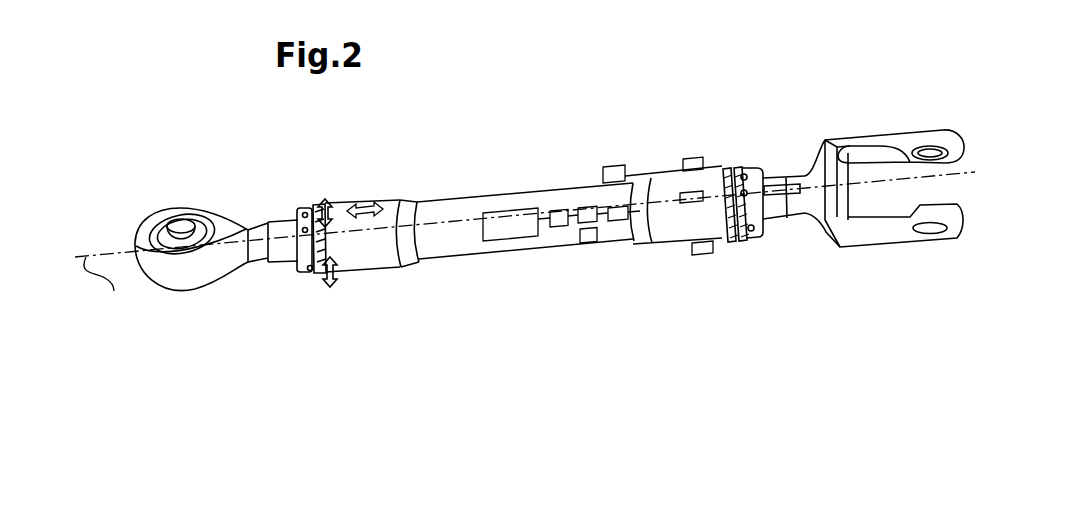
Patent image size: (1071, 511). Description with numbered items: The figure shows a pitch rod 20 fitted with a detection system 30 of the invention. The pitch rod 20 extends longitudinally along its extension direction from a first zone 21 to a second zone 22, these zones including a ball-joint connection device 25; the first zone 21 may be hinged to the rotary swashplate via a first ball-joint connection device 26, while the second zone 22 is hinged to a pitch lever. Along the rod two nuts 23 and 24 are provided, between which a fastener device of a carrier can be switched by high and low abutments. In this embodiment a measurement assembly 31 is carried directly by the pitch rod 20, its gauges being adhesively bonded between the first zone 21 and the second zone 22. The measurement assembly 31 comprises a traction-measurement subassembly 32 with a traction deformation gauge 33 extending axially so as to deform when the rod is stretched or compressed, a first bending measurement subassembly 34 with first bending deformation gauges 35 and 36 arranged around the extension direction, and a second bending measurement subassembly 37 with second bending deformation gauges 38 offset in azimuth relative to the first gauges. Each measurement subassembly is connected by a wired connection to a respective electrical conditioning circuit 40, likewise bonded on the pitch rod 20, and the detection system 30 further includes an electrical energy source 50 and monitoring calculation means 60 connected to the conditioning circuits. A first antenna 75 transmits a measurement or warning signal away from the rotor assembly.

The pitch rod 20 is at (841, 93).
The first zone 21 is at (214, 270).
The second zone 22 is at (868, 262).
The nut 23 is at (308, 210).
The nut 24 is at (748, 168).
The ball-joint connection device 25 is at (174, 202).
The first ball-joint connection device 26 is at (182, 232).
The detection system 30 is at (645, 112).
The measurement assembly 31 is at (512, 140).
The traction-measurement subassembly 32 is at (471, 199).
The traction deformation gauge 33 is at (502, 220).
The first bending measurement subassembly 34 is at (719, 199).
The first bending deformation gauge 35 is at (694, 158).
The first bending deformation gauge 36 is at (701, 256).
The second bending measurement subassembly 37 is at (729, 123).
The second bending deformation gauge 38 is at (693, 193).
The electrical conditioning circuit 40 is at (582, 211).
The electrical energy source 50 is at (583, 209).
The monitoring calculation means 60 is at (605, 237).
The first antenna 75 is at (592, 243).